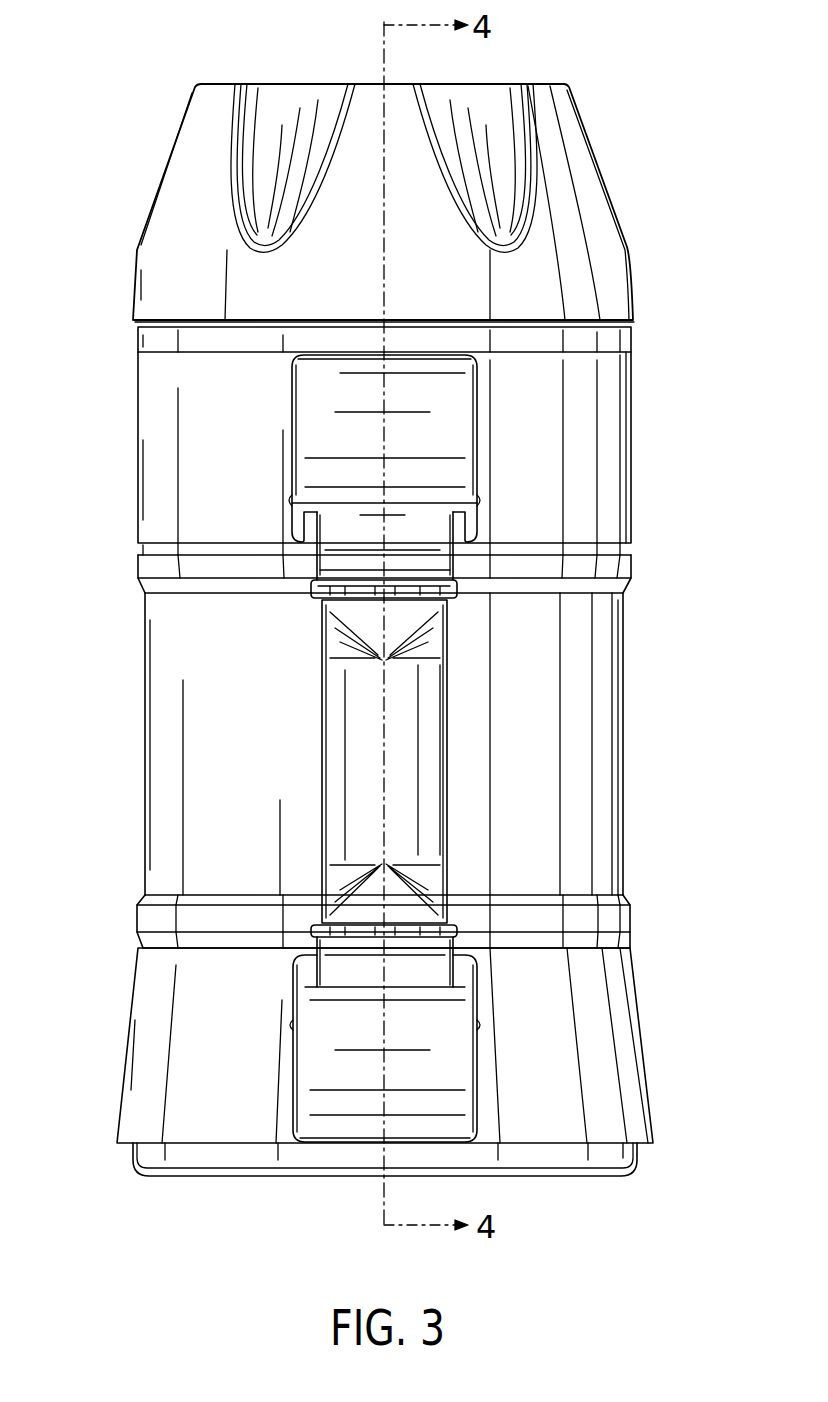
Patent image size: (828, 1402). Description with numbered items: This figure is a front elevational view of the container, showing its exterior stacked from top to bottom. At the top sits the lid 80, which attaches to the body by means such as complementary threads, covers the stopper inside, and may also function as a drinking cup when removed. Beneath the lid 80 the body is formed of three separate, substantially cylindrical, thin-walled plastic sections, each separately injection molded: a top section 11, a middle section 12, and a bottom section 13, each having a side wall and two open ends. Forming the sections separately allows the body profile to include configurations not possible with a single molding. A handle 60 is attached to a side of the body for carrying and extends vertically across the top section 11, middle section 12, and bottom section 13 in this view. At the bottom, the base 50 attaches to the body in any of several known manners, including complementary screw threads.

The lid 80 is at (607, 187).
The top section 11 is at (631, 443).
The middle section 12 is at (625, 731).
The bottom section 13 is at (641, 1018).
The base 50 is at (639, 1156).
The handle 60 is at (470, 707).